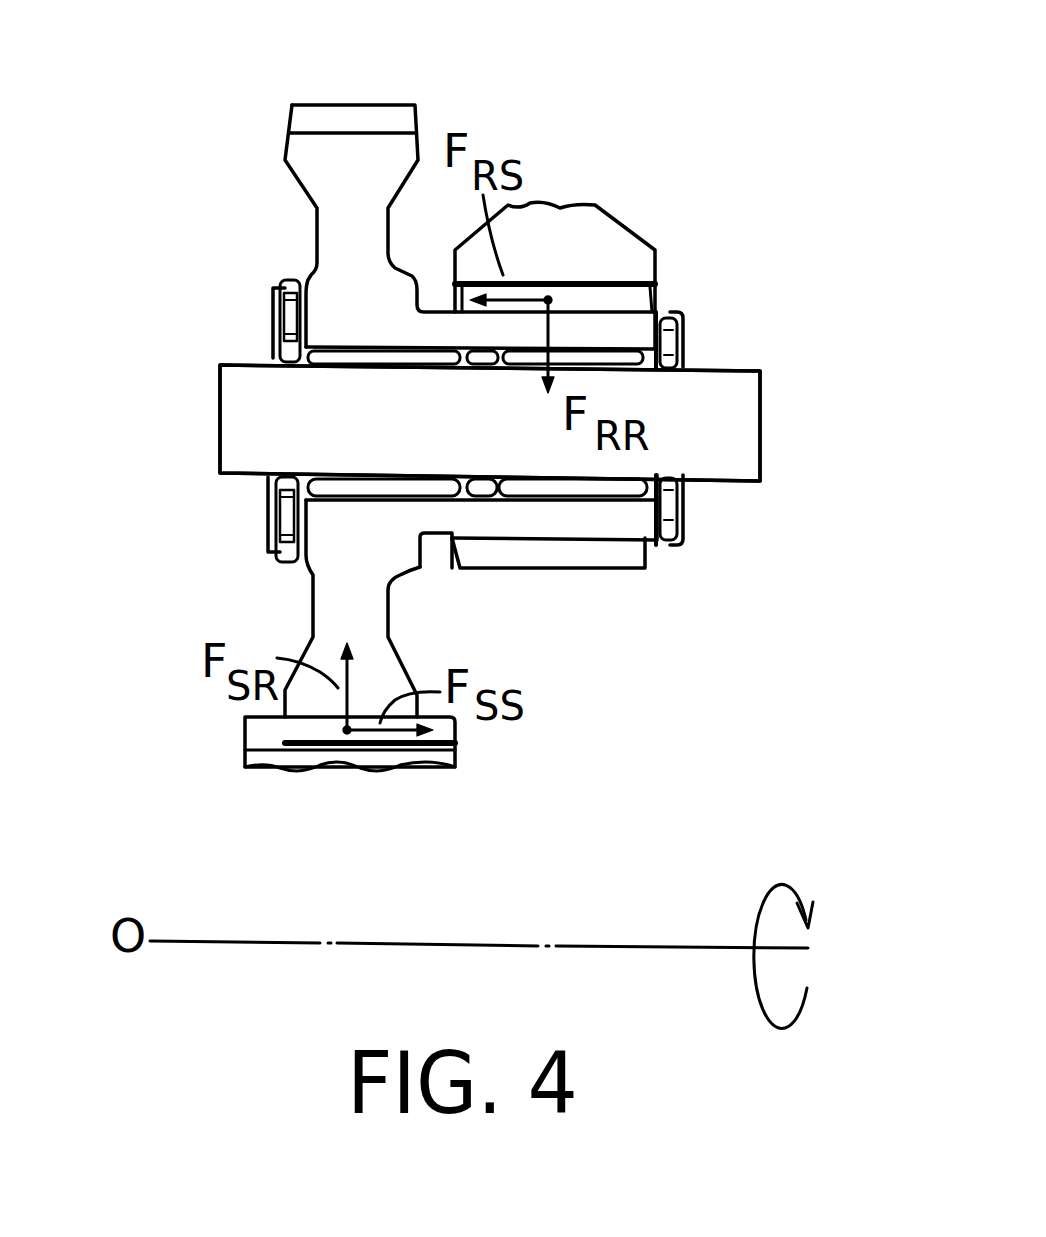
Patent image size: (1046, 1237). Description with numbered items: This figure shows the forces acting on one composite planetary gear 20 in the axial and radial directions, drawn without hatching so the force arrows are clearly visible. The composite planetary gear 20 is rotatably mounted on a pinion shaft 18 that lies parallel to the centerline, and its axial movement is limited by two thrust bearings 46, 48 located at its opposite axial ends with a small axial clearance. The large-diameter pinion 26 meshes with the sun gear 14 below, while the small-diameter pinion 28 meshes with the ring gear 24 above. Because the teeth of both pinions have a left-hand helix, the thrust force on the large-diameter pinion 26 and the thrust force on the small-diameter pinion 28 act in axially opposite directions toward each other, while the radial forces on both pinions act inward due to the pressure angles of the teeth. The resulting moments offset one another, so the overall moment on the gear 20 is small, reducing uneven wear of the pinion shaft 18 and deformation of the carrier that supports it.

The composite planetary gear 20 is at (222, 146).
The large-diameter pinion 26 is at (353, 158).
The ring gear 24 is at (602, 253).
The small-diameter pinion 28 is at (602, 528).
The pinion shaft 18 is at (240, 417).
The sun gear 14 is at (350, 755).
The thrust bearing 46 is at (287, 325).
The thrust bearing 48 is at (683, 530).